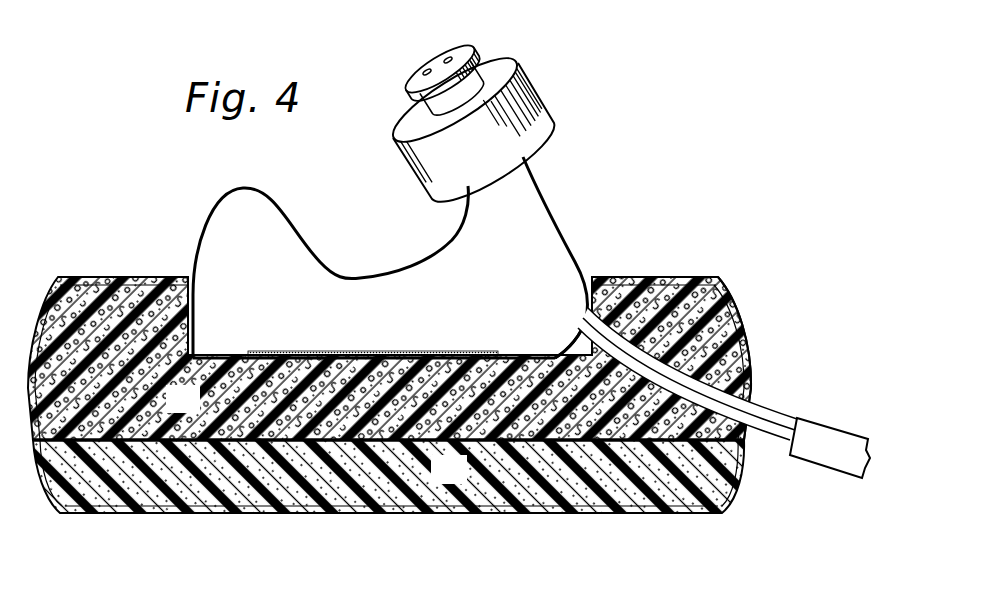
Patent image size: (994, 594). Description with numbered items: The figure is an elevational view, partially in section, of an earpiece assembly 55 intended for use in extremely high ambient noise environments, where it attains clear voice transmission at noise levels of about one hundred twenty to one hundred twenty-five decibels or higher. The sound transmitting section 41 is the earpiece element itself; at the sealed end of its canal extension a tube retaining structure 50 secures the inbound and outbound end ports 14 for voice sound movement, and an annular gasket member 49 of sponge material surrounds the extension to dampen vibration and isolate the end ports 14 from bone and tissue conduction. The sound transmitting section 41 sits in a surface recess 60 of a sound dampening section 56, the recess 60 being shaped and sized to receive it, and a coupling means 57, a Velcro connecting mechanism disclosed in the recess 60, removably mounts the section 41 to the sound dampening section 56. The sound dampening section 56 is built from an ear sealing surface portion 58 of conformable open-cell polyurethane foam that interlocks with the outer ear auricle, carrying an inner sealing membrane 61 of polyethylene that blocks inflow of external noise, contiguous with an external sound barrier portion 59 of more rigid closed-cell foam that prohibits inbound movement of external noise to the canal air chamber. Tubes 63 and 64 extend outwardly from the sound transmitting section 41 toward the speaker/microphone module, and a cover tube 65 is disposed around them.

The end ports 14 is at (425, 69).
The tube retaining structure 50 is at (478, 34).
The annular gasket member 49 is at (532, 98).
The sound transmitting section 41 is at (298, 236).
The earpiece assembly 55 is at (449, 347).
The surface recess 60 is at (588, 292).
The inner sealing membrane 61 is at (121, 277).
The tube 63 is at (710, 320).
The sound dampening section 56 is at (762, 391).
The cover tube 65 is at (826, 455).
The ear sealing surface portion 58 is at (197, 410).
The external sound barrier portion 59 is at (462, 480).
The coupling means 57 is at (388, 366).
The tube 64 is at (625, 485).